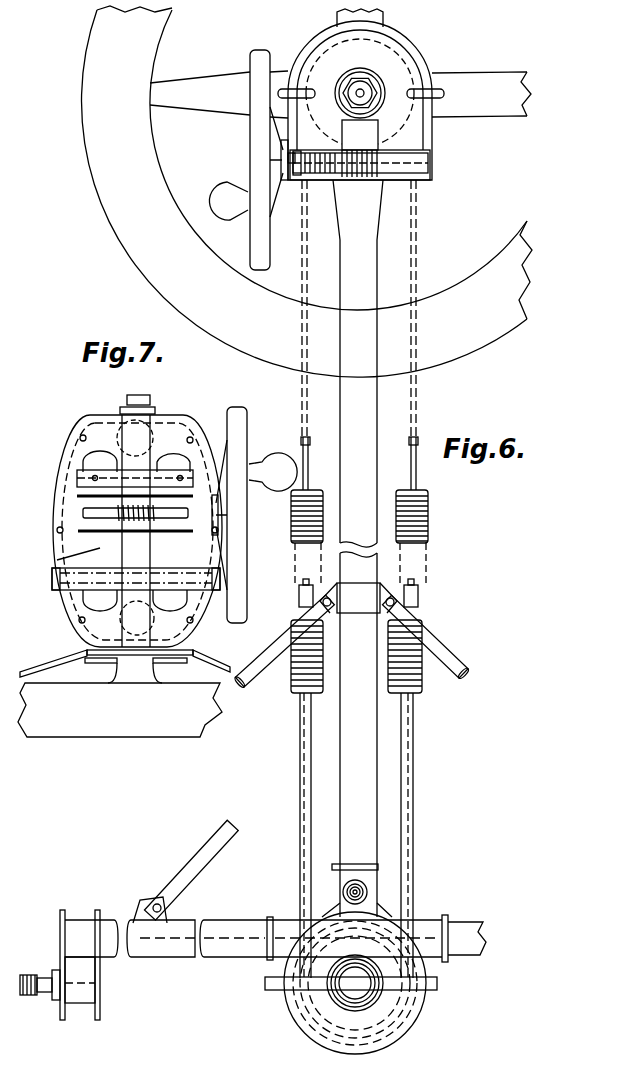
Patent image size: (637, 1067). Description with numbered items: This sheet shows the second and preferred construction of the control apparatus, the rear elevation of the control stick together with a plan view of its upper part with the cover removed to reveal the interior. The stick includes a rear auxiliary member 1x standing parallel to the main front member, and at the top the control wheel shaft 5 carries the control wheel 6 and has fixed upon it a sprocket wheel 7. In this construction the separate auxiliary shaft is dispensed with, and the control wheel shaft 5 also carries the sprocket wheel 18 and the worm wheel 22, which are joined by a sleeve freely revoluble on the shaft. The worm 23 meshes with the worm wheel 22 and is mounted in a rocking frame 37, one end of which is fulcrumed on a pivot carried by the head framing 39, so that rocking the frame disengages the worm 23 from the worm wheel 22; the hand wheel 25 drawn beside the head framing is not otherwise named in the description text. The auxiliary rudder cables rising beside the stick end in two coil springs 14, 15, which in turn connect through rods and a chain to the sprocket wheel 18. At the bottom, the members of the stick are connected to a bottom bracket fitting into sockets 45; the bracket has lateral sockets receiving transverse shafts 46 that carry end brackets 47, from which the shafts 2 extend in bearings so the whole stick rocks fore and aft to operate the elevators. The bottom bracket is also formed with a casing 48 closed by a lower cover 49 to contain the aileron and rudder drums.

In FIG. 6, the rear auxiliary member 1x is at (355, 262).
In FIG. 6, the shaft 2 is at (33, 1000).
In FIG. 7, the control wheel shaft 5 is at (122, 428).
In FIG. 6, the control wheel 6 is at (153, 154).
In FIG. 7, the control wheel 6 is at (120, 710).
In FIG. 7, the sprocket wheel 7 is at (80, 539).
In FIG. 6, the coil spring 14 is at (291, 690).
In FIG. 6, the coil spring 15 is at (421, 690).
In FIG. 7, the sprocket wheel 18 is at (77, 487).
In FIG. 7, the worm wheel 22 is at (83, 513).
In FIG. 6, the worm 23 is at (377, 180).
In FIG. 6, the hand wheel 25 is at (257, 160).
In FIG. 7, the hand wheel 25 is at (240, 523).
In FIG. 7, the rocking frame 37 is at (57, 560).
In FIG. 7, the head framing 39 is at (176, 430).
In FIG. 6, the socket 45 is at (340, 900).
In FIG. 6, the transverse shaft 46 is at (247, 930).
In FIG. 6, the end bracket 47 is at (97, 912).
In FIG. 6, the casing 48 is at (292, 958).
In FIG. 6, the lower cover 49 is at (297, 1008).